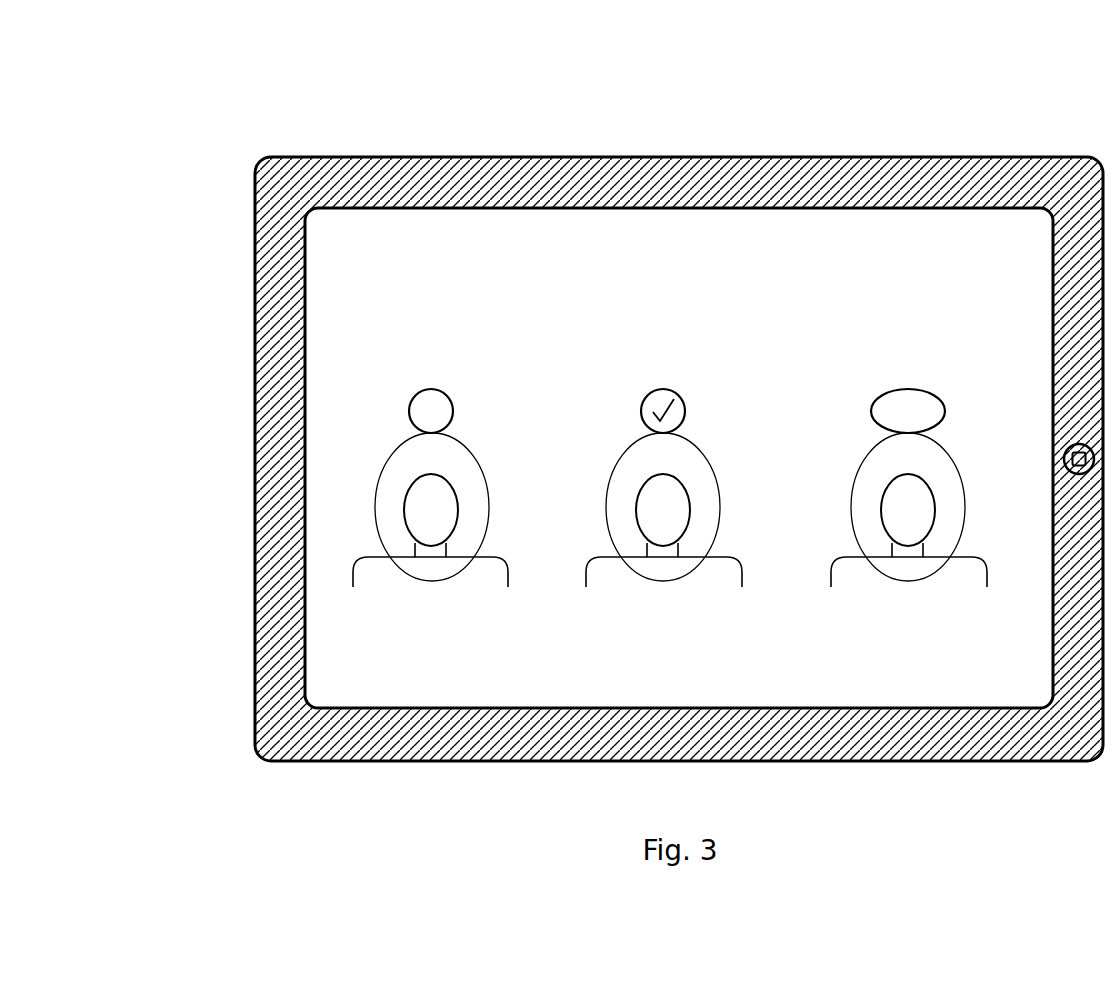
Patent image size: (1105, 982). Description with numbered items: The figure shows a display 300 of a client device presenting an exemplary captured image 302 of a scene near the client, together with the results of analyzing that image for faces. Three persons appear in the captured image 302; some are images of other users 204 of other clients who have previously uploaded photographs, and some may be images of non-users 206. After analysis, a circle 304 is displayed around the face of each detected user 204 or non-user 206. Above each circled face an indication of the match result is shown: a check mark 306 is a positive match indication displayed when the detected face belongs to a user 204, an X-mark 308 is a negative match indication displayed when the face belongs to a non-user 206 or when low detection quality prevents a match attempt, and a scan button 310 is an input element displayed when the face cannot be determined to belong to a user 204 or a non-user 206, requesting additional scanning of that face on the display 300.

The display 300 is at (265, 123).
The captured image 302 is at (348, 278).
The circle 304 is at (477, 462).
The check mark 306 is at (663, 388).
The X-mark 308 is at (430, 388).
The scan button 310 is at (908, 388).
The other users 204 is at (646, 518).
The non-users 206 is at (414, 518).